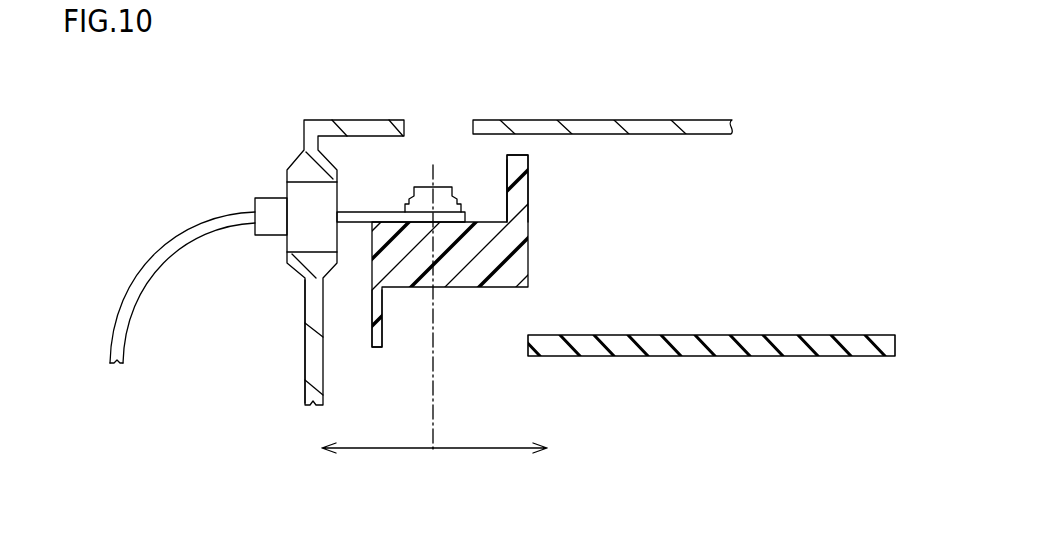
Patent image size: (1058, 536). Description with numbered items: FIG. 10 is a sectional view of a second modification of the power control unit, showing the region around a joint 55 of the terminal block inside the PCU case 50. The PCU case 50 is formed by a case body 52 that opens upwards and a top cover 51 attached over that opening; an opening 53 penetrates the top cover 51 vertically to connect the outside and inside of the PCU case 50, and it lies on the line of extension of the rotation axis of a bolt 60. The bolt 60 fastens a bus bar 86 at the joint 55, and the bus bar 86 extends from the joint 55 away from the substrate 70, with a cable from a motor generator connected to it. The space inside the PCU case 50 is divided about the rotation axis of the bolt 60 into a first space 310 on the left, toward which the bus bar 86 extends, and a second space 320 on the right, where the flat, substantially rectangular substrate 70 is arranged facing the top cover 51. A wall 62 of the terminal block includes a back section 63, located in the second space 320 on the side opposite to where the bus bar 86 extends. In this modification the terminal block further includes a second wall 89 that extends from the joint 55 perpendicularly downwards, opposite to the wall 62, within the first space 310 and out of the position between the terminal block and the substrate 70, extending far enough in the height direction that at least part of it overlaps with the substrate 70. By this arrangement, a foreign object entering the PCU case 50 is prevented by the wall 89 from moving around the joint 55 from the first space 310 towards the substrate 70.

The PCU case 50 is at (293, 373).
The top cover 51 is at (643, 120).
The case body 52 is at (313, 322).
The opening 53 is at (402, 128).
The joint 55 is at (482, 235).
The bolt 60 is at (440, 197).
The wall 62 is at (530, 162).
The back section 63 is at (517, 198).
The substrate 70 is at (727, 356).
The bus bar 86 is at (353, 218).
The wall 89 is at (375, 310).
The first space 310 is at (377, 439).
The second space 320 is at (490, 439).